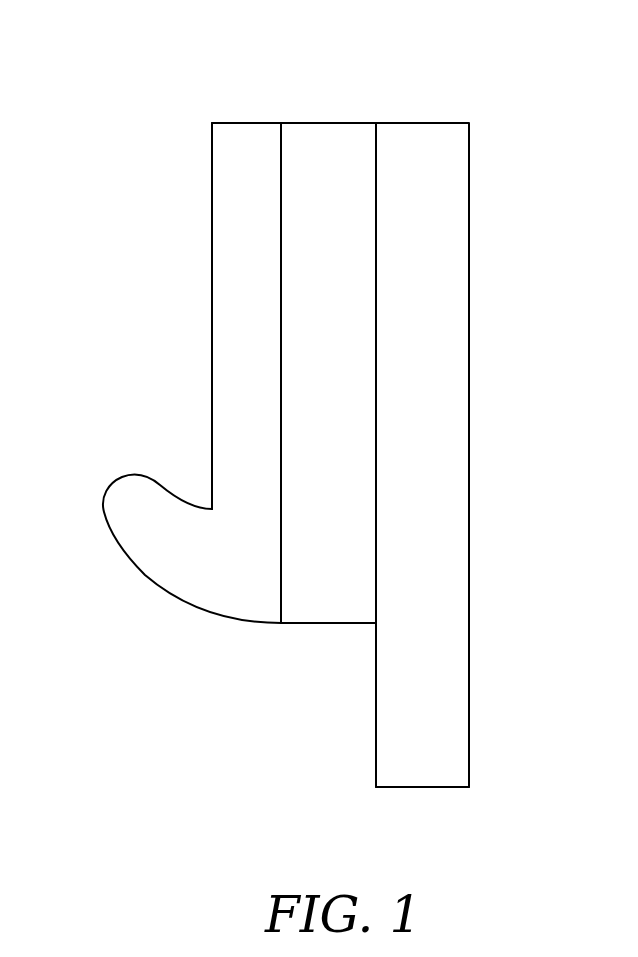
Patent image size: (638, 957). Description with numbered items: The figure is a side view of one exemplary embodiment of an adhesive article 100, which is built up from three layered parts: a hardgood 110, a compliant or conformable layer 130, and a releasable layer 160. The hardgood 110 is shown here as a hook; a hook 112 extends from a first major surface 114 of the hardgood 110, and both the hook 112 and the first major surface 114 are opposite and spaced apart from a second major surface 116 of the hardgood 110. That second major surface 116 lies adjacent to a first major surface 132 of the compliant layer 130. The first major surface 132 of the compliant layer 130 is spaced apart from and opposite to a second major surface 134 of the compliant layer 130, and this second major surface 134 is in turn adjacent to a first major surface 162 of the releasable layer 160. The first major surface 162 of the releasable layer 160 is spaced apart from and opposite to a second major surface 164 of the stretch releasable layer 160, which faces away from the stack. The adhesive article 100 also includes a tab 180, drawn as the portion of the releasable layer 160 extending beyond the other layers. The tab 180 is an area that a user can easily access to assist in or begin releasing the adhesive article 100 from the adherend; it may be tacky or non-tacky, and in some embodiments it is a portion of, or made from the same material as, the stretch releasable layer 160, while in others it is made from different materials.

The adhesive article 100 is at (467, 60).
The hardgood 110 is at (227, 189).
The hook 112 is at (127, 510).
The first major surface 114 is at (212, 332).
The second major surface 116 is at (282, 258).
The compliant layer 130 is at (333, 145).
The first major surface 132 is at (281, 367).
The second major surface 134 is at (376, 303).
The releasable layer 160 is at (443, 200).
The first major surface 162 is at (376, 402).
The second major surface 164 is at (468, 302).
The tab 180 is at (436, 744).